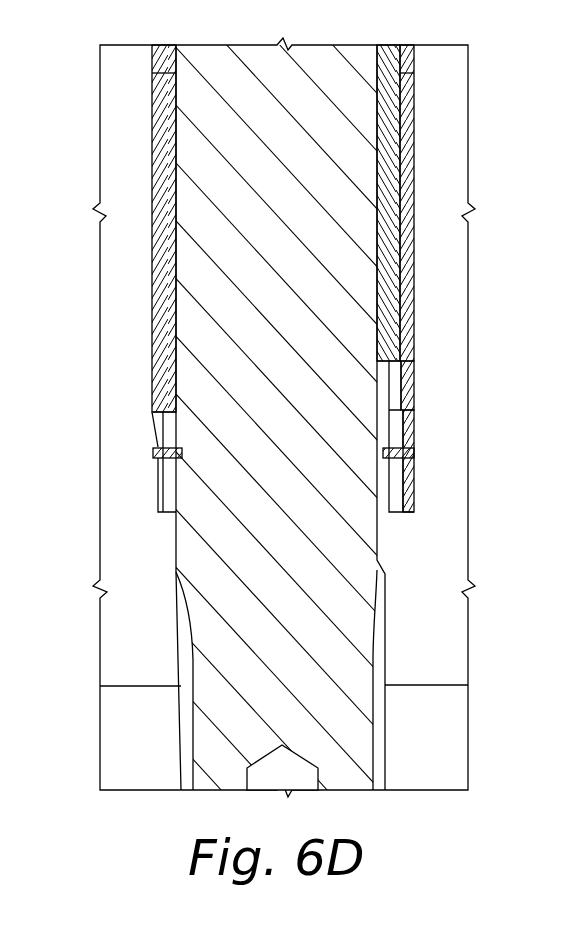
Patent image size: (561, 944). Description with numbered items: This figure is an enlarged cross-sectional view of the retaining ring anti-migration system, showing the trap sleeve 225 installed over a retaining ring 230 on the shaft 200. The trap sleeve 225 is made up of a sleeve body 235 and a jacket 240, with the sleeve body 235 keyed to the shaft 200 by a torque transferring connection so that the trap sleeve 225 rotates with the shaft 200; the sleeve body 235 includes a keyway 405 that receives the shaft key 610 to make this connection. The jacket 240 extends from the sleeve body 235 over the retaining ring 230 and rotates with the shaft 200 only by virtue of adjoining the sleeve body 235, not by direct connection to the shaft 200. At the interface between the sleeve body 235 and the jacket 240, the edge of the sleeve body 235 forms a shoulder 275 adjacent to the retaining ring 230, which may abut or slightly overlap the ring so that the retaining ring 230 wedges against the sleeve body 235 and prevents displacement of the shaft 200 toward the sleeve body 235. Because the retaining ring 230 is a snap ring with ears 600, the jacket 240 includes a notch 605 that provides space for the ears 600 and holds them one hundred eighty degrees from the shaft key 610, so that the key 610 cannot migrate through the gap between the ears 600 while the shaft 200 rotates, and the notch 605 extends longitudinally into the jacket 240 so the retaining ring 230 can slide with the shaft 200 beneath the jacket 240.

The shaft 200 is at (294, 404).
The trap sleeve 225 is at (414, 313).
The retaining ring 230 is at (399, 462).
The sleeve body 235 is at (407, 257).
The jacket 240 is at (417, 474).
The shoulder 275 is at (400, 413).
The keyway 405 is at (397, 393).
The ears 600 is at (152, 454).
The notch 605 is at (162, 495).
The shaft key 610 is at (398, 173).